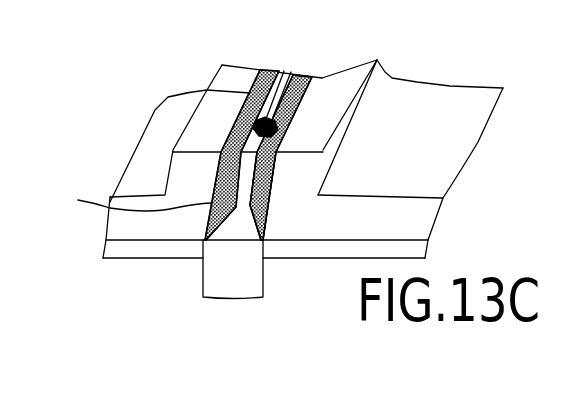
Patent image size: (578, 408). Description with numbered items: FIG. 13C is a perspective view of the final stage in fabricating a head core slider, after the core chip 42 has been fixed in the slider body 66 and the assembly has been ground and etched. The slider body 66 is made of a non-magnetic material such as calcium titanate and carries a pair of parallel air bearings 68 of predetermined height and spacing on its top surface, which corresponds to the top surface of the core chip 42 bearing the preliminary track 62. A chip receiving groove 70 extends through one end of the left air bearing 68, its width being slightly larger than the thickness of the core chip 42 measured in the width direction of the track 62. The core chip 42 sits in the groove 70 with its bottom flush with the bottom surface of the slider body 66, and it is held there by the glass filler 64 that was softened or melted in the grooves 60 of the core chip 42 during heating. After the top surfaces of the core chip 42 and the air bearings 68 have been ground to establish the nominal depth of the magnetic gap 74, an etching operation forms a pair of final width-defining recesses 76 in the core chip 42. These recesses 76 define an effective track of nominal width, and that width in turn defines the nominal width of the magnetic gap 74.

The core chip 42 is at (178, 294).
The grooves 60 is at (265, 215).
The preliminary track 62 is at (226, 138).
The glass filler 64 is at (127, 197).
The slider body 66 is at (134, 102).
The air bearings 68 is at (248, 80).
The chip receiving groove 70 is at (305, 98).
The magnetic gap 74 is at (268, 118).
The final width-defining recesses 76 is at (259, 126).